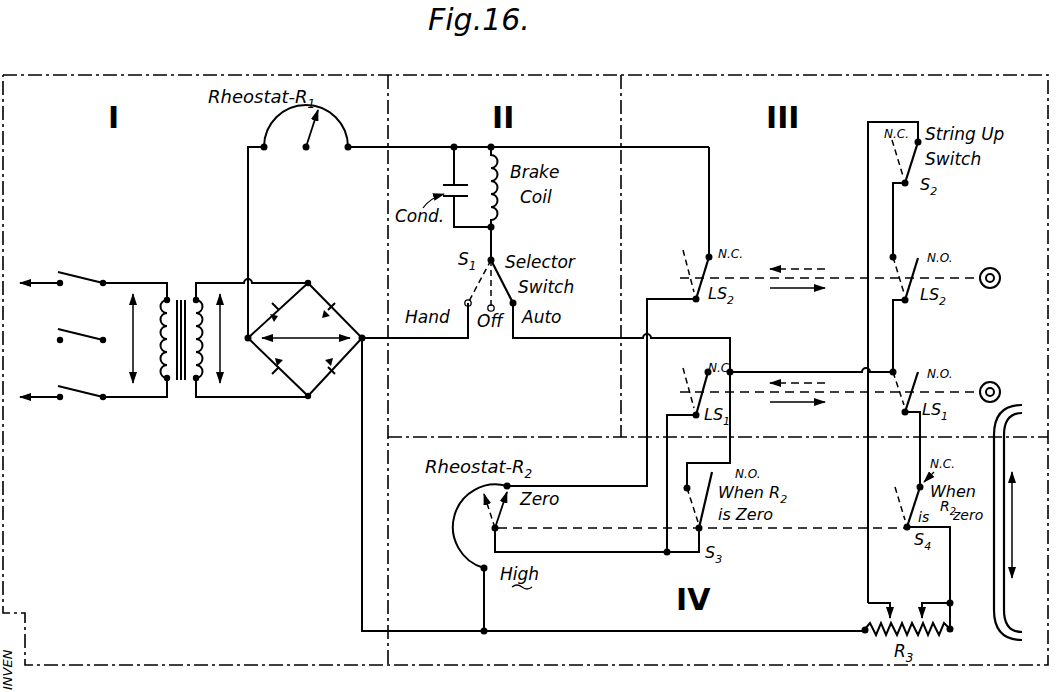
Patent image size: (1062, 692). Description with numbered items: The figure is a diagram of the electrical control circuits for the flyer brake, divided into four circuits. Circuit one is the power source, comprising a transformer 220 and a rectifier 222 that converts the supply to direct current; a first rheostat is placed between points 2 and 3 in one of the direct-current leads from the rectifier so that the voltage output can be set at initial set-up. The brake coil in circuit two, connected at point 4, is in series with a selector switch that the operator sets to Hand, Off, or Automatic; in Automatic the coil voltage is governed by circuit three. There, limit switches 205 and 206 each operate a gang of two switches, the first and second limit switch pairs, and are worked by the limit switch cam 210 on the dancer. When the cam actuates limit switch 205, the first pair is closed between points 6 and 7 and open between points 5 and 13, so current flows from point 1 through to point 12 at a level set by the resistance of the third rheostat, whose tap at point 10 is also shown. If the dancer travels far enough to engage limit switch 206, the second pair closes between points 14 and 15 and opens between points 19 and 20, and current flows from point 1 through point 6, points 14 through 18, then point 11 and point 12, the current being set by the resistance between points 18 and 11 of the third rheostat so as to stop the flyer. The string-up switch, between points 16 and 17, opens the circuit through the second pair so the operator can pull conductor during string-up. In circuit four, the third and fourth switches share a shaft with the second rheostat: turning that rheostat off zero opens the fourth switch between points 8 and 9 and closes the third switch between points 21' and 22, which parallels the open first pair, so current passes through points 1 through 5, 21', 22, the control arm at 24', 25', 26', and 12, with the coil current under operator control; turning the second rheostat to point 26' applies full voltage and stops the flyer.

The point 1 is at (241, 341).
The point 2 is at (263, 158).
The point 3 is at (344, 158).
The point 4 is at (487, 137).
The point 5 is at (697, 384).
The point 6 is at (900, 378).
The point 7 is at (906, 429).
The point 8 is at (909, 497).
The point 9 is at (921, 577).
The point 10 is at (935, 592).
The point 11 is at (905, 641).
The point 12 is at (612, 467).
The point 13 is at (687, 482).
The point 14 is at (905, 315).
The point 15 is at (905, 263).
The point 16 is at (905, 219).
The point 17 is at (920, 136).
The point 18 is at (887, 598).
The point 19 is at (607, 391).
The point 20 is at (698, 266).
The point 21' is at (701, 495).
The point 22 is at (689, 512).
The point 24' is at (575, 522).
The point 25' is at (527, 506).
The point 26' is at (464, 600).
The limit switch 205 is at (999, 383).
The limit switch 206 is at (999, 269).
The limit switch cam 210 is at (996, 618).
The transformer 220 is at (190, 258).
The rectifier 222 is at (305, 403).